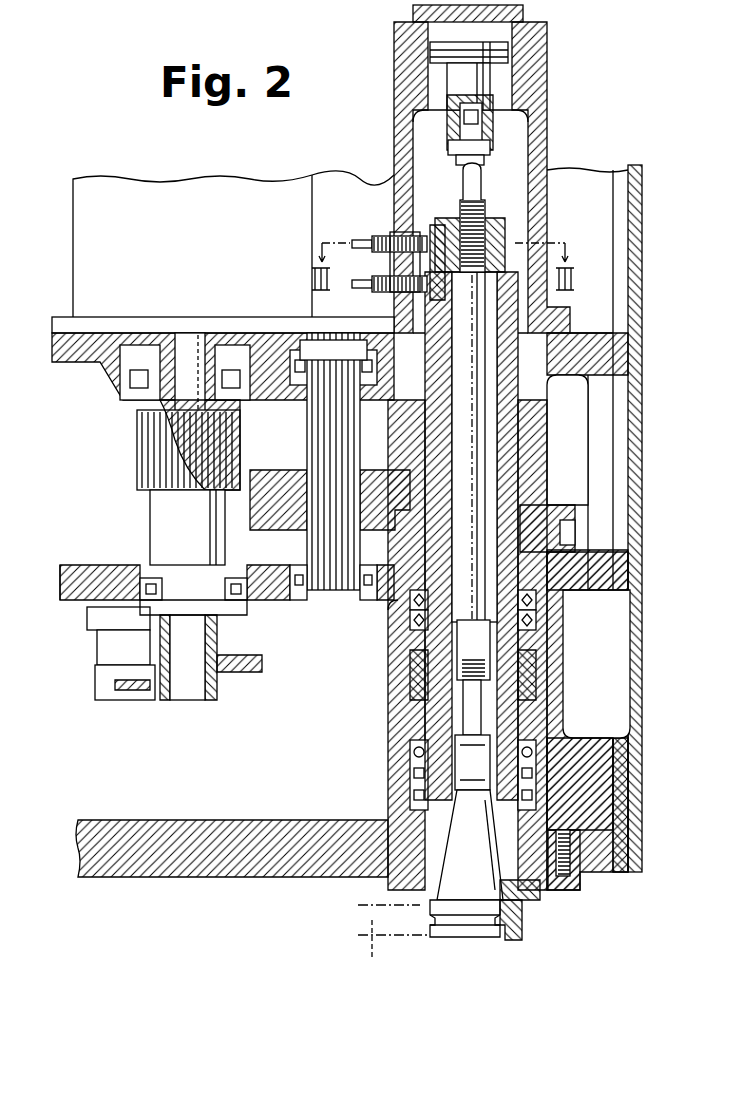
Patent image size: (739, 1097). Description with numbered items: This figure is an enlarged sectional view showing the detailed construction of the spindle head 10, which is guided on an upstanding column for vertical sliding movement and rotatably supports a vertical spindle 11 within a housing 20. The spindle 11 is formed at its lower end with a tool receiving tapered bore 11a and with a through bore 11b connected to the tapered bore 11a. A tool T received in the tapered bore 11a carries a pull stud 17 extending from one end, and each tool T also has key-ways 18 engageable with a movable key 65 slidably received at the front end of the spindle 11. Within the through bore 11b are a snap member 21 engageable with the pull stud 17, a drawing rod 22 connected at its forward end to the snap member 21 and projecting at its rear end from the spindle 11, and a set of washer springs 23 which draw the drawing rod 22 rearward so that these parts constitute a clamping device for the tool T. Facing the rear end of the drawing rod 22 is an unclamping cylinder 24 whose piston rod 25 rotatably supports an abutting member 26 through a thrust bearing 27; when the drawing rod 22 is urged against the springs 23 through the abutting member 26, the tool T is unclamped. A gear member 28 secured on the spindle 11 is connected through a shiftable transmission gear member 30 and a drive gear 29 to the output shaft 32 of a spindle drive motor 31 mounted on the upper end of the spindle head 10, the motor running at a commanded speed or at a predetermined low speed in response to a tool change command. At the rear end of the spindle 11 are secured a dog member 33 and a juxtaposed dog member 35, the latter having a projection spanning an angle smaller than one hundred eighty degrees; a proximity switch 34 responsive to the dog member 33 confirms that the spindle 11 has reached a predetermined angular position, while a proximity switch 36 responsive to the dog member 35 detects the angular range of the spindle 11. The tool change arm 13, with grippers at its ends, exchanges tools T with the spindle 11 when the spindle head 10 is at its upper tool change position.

The spindle head 10 is at (632, 342).
The spindle 11 is at (452, 720).
The tool receiving tapered bore 11a is at (550, 828).
The through bore 11b is at (527, 651).
The tool change arm 13 is at (391, 944).
The pull stud 17 is at (456, 790).
The key-way 18 is at (516, 930).
The housing 20 is at (185, 862).
The snap member 21 is at (460, 692).
The drawing rod 22 is at (478, 466).
The washer springs 23 is at (522, 283).
The unclamping cylinder 24 is at (518, 75).
The piston rod 25 is at (478, 90).
The abutting member 26 is at (476, 157).
The thrust bearing 27 is at (492, 135).
The gear member 28 is at (567, 508).
The gear 29 is at (150, 453).
The shiftable transmission gear member 30 is at (270, 485).
The spindle drive motor 31 is at (85, 258).
The output shaft 32 is at (185, 398).
The dog member 33 is at (432, 228).
The proximity switch 34 is at (380, 240).
The dog member 35 is at (432, 285).
The proximity switch 36 is at (367, 290).
The movable key 65 is at (532, 900).
The tool T is at (458, 932).